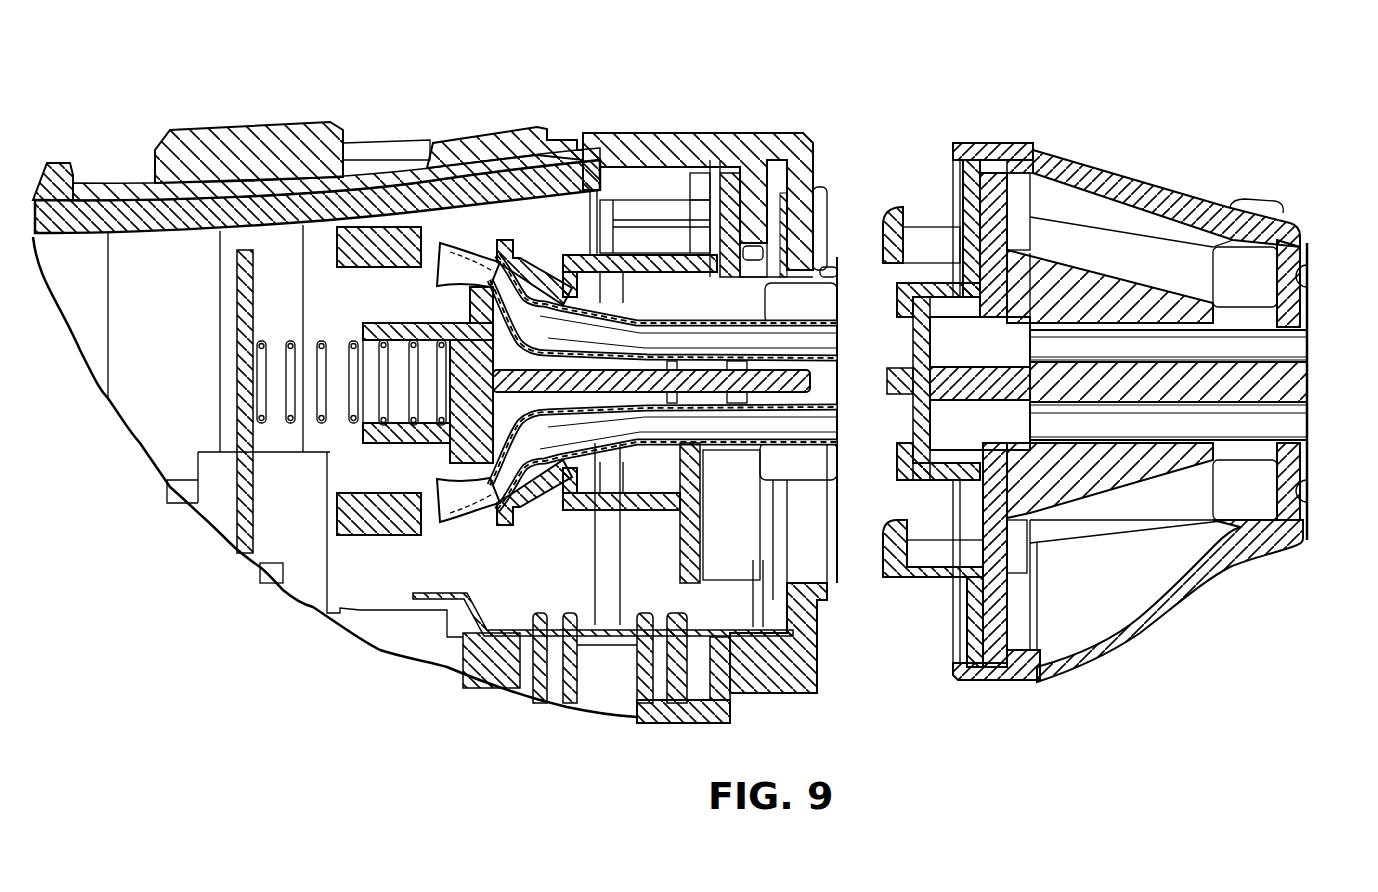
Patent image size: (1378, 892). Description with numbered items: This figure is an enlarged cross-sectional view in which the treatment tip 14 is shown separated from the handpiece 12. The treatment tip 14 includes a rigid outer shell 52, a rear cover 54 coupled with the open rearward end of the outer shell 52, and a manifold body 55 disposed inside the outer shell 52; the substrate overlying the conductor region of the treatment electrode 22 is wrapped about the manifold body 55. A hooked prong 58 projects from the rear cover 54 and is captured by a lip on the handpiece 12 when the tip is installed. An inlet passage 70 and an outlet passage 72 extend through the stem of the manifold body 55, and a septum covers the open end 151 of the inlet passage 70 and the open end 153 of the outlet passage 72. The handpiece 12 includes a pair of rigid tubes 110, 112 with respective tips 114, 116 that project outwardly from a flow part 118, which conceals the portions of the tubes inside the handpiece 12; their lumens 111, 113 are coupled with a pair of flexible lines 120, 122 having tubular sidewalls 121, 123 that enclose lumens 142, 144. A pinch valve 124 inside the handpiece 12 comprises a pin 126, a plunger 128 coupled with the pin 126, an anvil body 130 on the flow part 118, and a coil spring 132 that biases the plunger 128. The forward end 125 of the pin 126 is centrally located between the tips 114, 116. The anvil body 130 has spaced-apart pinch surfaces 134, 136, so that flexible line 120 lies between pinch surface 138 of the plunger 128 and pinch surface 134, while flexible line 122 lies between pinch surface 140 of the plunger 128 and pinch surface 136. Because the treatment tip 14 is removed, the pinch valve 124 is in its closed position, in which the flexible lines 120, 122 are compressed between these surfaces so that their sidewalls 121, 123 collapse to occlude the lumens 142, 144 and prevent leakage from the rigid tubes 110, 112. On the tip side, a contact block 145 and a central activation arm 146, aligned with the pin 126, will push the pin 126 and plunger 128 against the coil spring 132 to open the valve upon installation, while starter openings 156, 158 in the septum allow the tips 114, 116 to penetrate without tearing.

The handpiece 12 is at (685, 130).
The treatment tip 14 is at (1086, 152).
The treatment electrode 22 is at (1313, 390).
The outer shell 52 is at (1138, 183).
The rear cover 54 is at (968, 633).
The manifold body 55 is at (1123, 470).
The hooked prong 58 is at (893, 250).
The inlet passage 70 is at (1287, 427).
The outlet passage 72 is at (1287, 343).
The rigid tube 110 is at (670, 322).
The lumen 111 is at (792, 347).
The rigid tube 112 is at (650, 450).
The lumen 113 is at (730, 417).
The tip 114 is at (838, 343).
The tip 116 is at (887, 385).
The flow part 118 is at (693, 290).
The flexible line 120 is at (492, 255).
The tubular sidewall 121 is at (501, 258).
The flexible line 122 is at (473, 515).
The tubular sidewall 123 is at (468, 520).
The pinch valve 124 is at (377, 317).
The forward end 125 is at (806, 385).
The pin 126 is at (677, 368).
The plunger 128 is at (358, 460).
The anvil body 130 is at (530, 258).
The coil spring 132 is at (283, 377).
The pinch surface 134 is at (541, 290).
The pinch surface 136 is at (523, 468).
The pinch surface 138 is at (478, 316).
The pinch surface 140 is at (493, 460).
The lumen 142 is at (450, 243).
The lumen 144 is at (458, 508).
The contact block 145 is at (897, 393).
The activation arm 146 is at (963, 382).
The open end 151 is at (937, 307).
The open end 153 is at (950, 453).
The starter opening 156 is at (930, 343).
The starter opening 158 is at (930, 418).